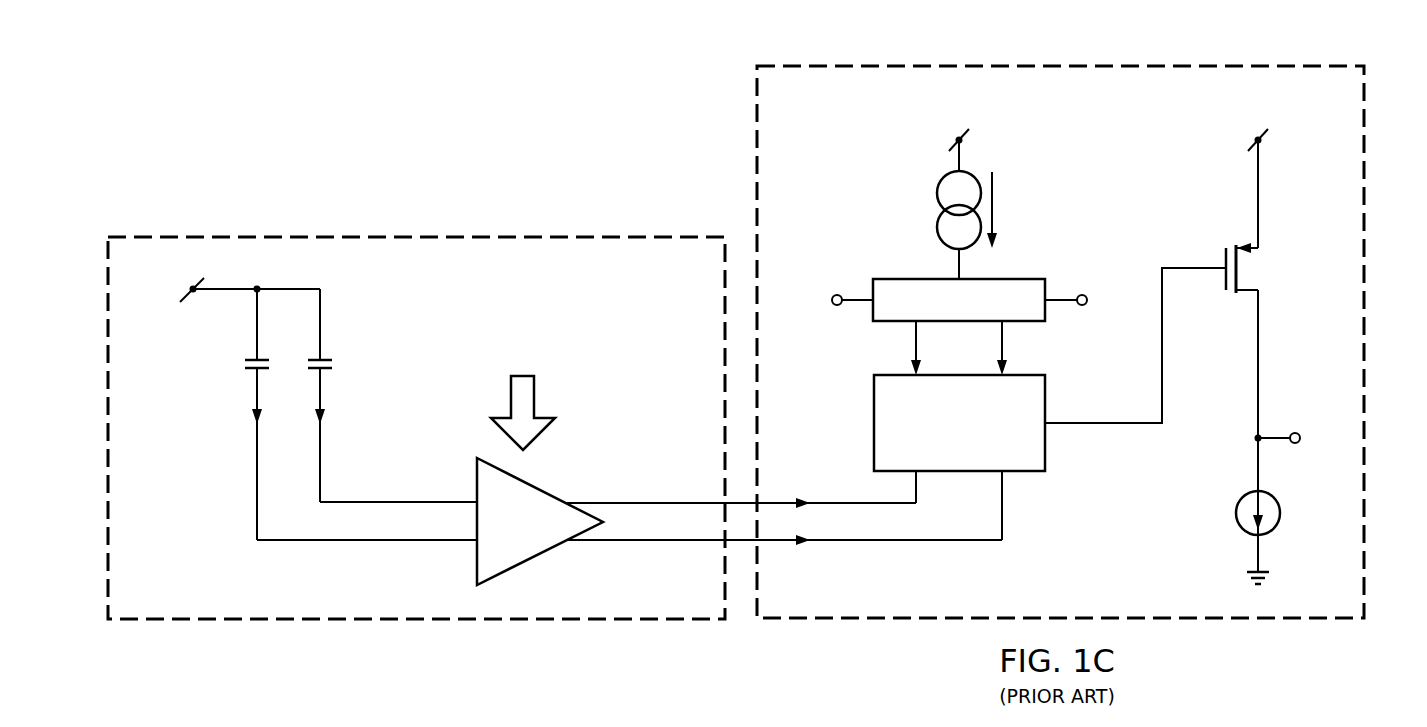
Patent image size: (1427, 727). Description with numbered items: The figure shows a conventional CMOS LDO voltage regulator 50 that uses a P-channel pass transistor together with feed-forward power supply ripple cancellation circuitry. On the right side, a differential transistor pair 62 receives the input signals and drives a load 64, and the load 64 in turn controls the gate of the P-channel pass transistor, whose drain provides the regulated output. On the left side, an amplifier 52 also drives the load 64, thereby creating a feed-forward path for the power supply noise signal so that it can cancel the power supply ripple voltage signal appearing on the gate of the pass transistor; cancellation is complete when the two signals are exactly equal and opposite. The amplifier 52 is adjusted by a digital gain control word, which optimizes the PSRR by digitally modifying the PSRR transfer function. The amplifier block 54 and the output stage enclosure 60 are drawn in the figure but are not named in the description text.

The CMOS LDO voltage regulator 50 is at (424, 138).
The amplifier 52 is at (208, 234).
The variable gain amplifier 54 is at (540, 554).
The output stage 60 is at (1254, 60).
The differential transistor pair 62 is at (895, 278).
The load 64 is at (1047, 449).